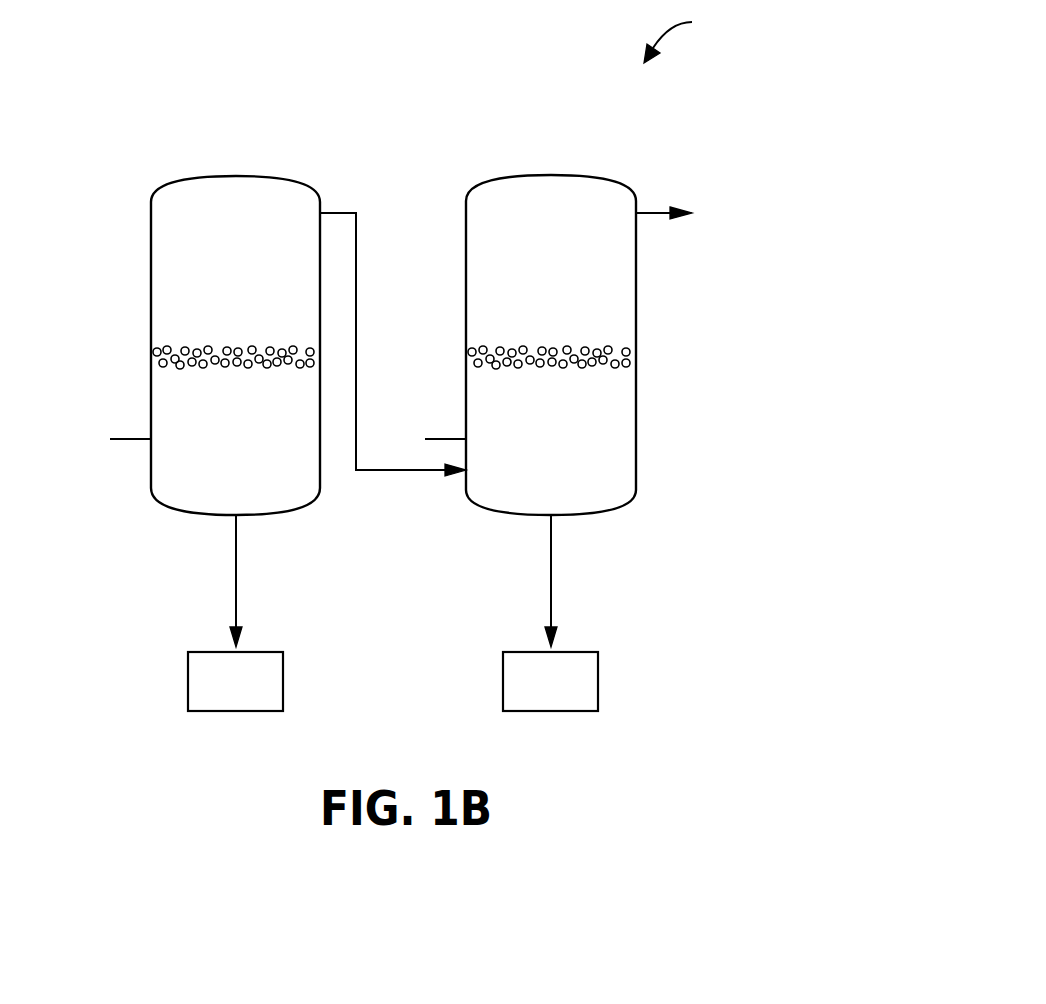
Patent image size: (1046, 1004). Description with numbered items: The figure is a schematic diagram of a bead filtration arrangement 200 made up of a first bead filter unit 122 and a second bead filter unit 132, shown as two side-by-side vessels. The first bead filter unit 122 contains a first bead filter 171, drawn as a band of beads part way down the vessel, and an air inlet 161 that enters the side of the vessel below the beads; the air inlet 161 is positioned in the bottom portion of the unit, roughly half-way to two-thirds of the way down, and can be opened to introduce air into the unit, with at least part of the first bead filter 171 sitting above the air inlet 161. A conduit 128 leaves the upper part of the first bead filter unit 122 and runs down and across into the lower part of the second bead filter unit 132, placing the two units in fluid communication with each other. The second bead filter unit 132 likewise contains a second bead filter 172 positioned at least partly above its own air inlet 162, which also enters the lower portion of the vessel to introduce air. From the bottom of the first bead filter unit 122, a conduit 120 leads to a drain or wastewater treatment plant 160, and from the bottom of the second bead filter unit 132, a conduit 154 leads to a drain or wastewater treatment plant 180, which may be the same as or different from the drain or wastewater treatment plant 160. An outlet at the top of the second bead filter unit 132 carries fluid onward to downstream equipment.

The system 200 is at (688, 36).
The first bead filter unit 122 is at (235, 175).
The second bead filter unit 132 is at (550, 174).
The conduit 128 is at (356, 322).
The air inlet 161 is at (133, 439).
The air inlet 162 is at (447, 439).
The first bead filter 171 is at (228, 347).
The second bead filter 172 is at (543, 347).
The conduit 120 is at (236, 598).
The conduit 154 is at (551, 598).
The drain or wastewater treatment plant 160 is at (253, 693).
The drain or wastewater treatment plant 180 is at (568, 693).